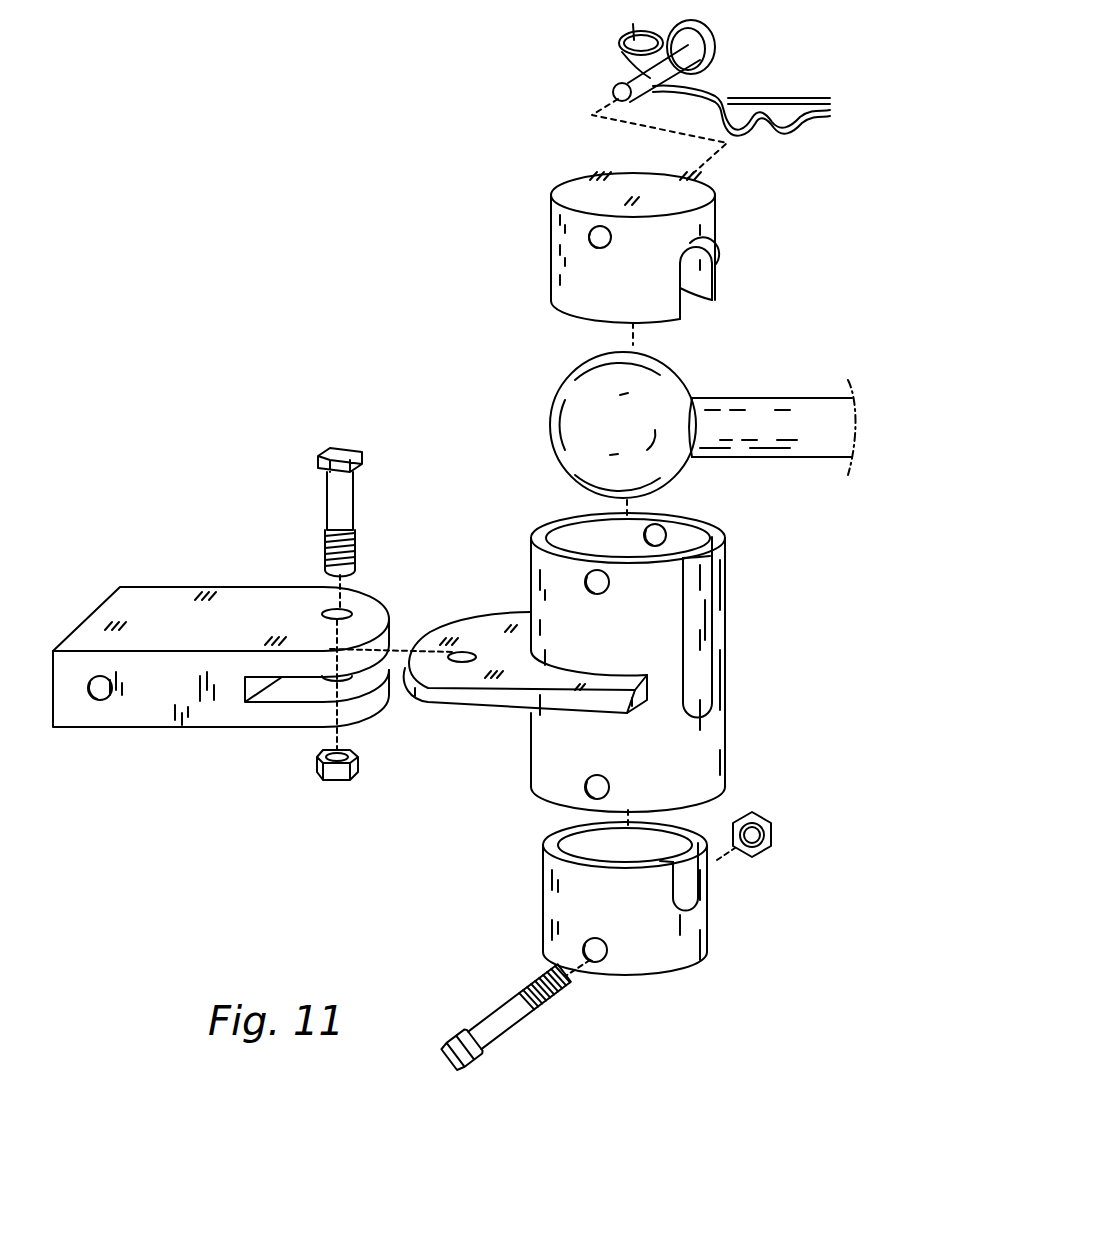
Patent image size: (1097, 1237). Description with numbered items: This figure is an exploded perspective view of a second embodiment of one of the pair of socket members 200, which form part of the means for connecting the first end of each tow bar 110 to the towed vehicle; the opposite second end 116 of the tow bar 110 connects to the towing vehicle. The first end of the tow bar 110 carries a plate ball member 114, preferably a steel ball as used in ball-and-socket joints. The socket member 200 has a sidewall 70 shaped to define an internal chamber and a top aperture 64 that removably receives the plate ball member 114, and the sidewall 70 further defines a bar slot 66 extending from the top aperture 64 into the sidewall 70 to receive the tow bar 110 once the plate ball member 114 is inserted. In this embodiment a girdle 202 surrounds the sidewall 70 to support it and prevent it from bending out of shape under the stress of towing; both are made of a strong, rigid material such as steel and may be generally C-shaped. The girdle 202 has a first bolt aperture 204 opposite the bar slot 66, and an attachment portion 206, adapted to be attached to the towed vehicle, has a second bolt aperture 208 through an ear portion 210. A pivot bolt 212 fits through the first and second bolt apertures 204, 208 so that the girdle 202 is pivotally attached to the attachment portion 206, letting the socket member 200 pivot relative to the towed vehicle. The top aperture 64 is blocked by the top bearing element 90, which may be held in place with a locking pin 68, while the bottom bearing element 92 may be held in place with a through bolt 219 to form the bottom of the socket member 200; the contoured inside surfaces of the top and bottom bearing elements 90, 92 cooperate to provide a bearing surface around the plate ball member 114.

The locking pin 68 is at (715, 57).
The top bearing element 90 is at (555, 268).
The plate ball member 114 is at (562, 400).
The tow bar 110 is at (818, 405).
The second end 116 is at (720, 452).
The top aperture 64 is at (682, 540).
The bar slot 66 is at (727, 633).
The sidewall 70 is at (645, 632).
The girdle 202 is at (563, 707).
The first bolt aperture 204 is at (462, 650).
The attachment portion 206 is at (205, 722).
The second bolt aperture 208 is at (355, 606).
The ear portion 210 is at (380, 615).
The pivot bolt 212 is at (355, 488).
The bottom bearing element 92 is at (543, 888).
The through bolt 219 is at (482, 1020).
The socket member 200 is at (820, 870).